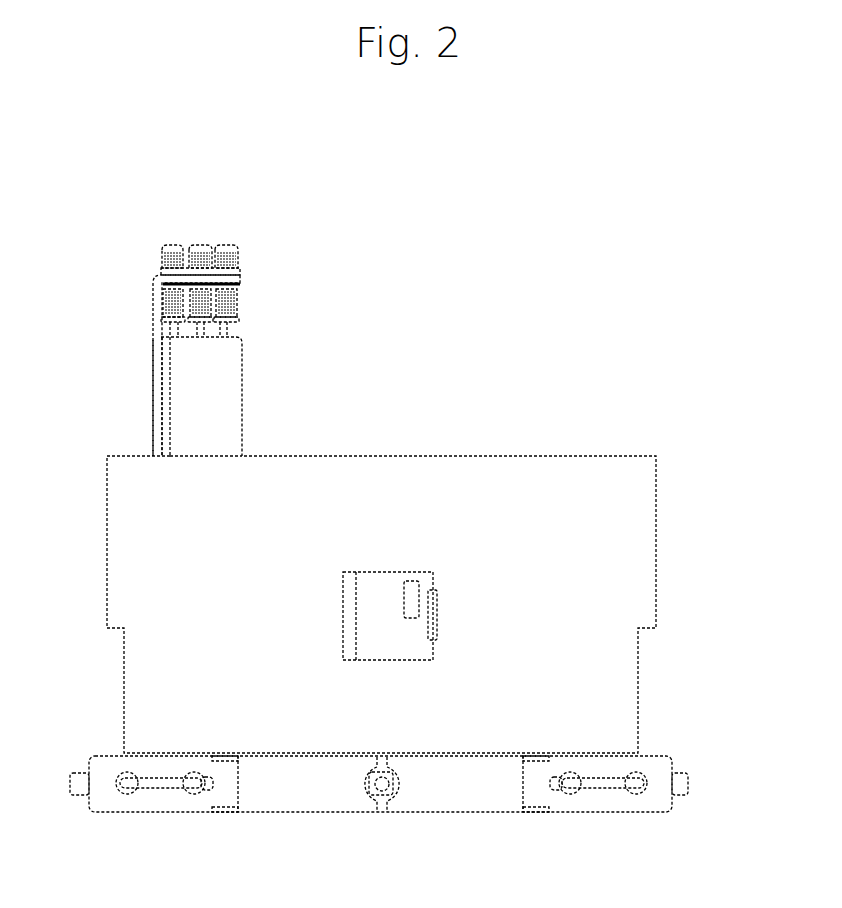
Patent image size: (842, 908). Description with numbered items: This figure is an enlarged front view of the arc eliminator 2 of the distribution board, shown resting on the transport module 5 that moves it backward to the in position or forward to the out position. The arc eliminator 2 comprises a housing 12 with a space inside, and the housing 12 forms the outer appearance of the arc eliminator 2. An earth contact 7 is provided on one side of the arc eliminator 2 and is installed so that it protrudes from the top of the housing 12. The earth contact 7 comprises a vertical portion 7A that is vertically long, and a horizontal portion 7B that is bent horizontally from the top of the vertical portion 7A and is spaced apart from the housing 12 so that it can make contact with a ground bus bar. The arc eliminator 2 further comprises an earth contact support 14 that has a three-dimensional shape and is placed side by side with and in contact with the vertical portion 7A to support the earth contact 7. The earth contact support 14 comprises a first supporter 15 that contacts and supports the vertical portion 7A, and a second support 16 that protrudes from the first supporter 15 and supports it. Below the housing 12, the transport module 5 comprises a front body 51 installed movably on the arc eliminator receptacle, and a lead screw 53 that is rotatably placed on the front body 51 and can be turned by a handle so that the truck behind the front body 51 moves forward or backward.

The arc eliminator 2 is at (612, 425).
The transport module 5 is at (421, 819).
The earth contact 7 is at (253, 270).
The vertical portion 7A is at (160, 350).
The horizontal portion 7B is at (148, 272).
The housing 12 is at (157, 553).
The earth contact support 14 is at (139, 396).
The first supporter 15 is at (168, 377).
The second support 16 is at (190, 428).
The front body 51 is at (451, 788).
The lead screw 53 is at (383, 795).